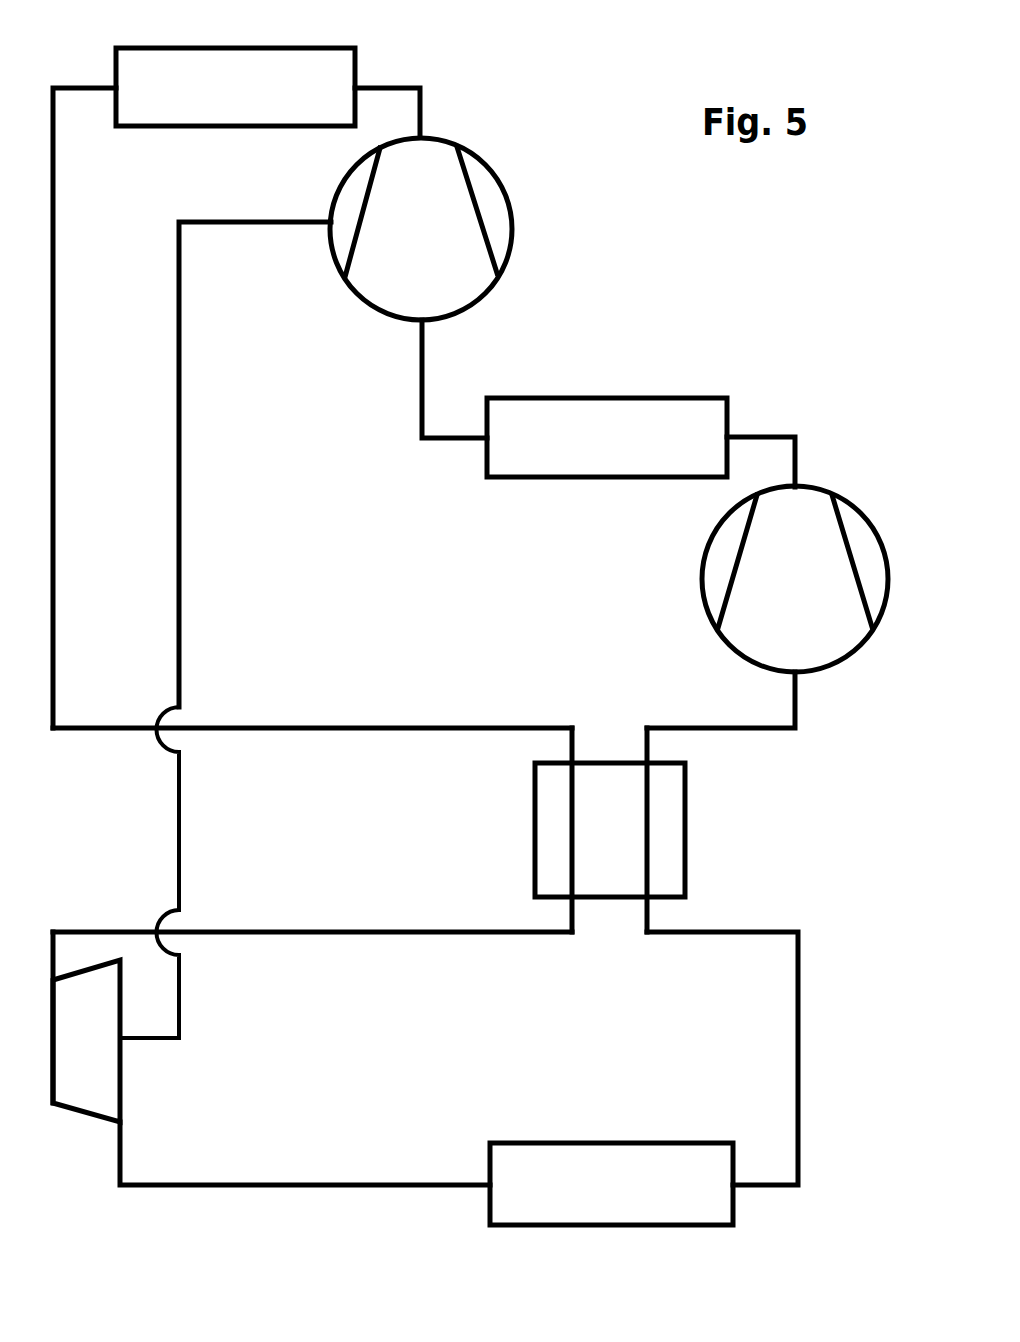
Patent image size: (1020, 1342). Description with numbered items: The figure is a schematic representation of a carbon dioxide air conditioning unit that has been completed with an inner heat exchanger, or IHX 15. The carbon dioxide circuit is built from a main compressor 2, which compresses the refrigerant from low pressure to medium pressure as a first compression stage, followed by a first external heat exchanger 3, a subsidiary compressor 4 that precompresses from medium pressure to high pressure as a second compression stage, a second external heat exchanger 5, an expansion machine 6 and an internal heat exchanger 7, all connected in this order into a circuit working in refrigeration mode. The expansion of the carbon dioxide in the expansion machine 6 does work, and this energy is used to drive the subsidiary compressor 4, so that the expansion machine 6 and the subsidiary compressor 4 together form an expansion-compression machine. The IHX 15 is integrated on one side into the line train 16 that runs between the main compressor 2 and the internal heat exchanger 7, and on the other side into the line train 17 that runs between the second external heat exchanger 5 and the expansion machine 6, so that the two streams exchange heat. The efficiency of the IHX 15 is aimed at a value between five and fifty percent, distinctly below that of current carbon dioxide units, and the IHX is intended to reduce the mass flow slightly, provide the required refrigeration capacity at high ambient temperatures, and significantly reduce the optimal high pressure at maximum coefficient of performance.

The main compressor 2 is at (877, 583).
The first external heat exchanger 3 is at (637, 420).
The subsidiary compressor 4 is at (502, 207).
The second external heat exchanger 5 is at (265, 73).
The expansion machine 6 is at (110, 1085).
The internal heat exchanger 7 is at (662, 1208).
The IHX 15 is at (673, 828).
The line train 16 is at (800, 988).
The line train 17 is at (55, 478).